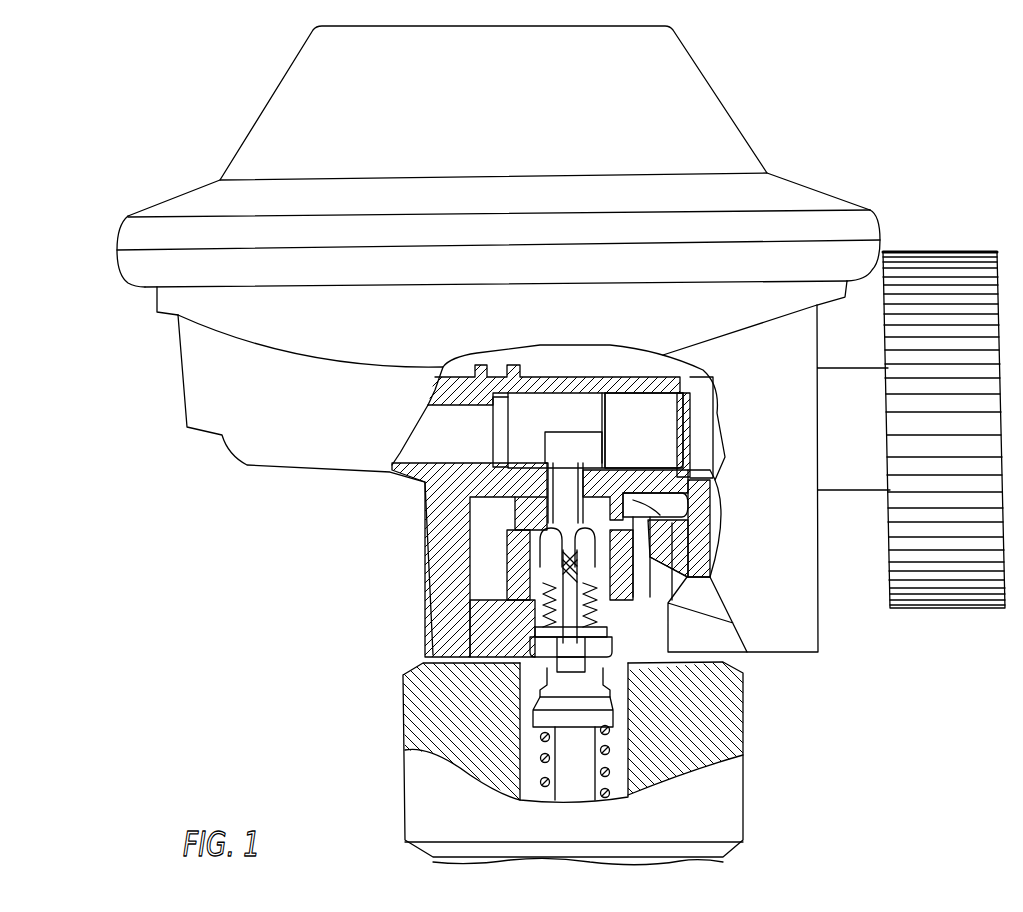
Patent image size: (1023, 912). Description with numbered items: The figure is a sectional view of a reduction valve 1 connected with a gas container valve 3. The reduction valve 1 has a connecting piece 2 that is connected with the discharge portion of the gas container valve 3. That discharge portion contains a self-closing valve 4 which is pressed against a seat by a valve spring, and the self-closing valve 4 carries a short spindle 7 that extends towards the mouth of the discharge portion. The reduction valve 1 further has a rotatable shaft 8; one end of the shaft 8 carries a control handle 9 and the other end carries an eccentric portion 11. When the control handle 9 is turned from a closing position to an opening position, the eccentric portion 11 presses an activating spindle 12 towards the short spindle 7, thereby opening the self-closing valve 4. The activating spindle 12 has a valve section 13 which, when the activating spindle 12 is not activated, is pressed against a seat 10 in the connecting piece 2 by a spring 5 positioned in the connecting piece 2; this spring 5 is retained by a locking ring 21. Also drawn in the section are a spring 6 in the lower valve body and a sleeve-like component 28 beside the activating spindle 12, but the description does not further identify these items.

The reduction valve 1 is at (734, 96).
The connecting piece 2 is at (470, 527).
The gas container valve 3 is at (743, 712).
The self-closing valve 4 is at (612, 700).
The spring 5 is at (528, 618).
The valve spring 6 is at (610, 797).
The short spindle 7 is at (590, 666).
The rotatable shaft 8 is at (657, 448).
The control handle 9 is at (928, 252).
The seat 10 is at (655, 509).
The eccentric portion 11 is at (562, 440).
The activating spindle 12 is at (536, 492).
The valve section 13 is at (638, 560).
The locking ring 21 is at (612, 632).
The sleeve 28 is at (508, 570).